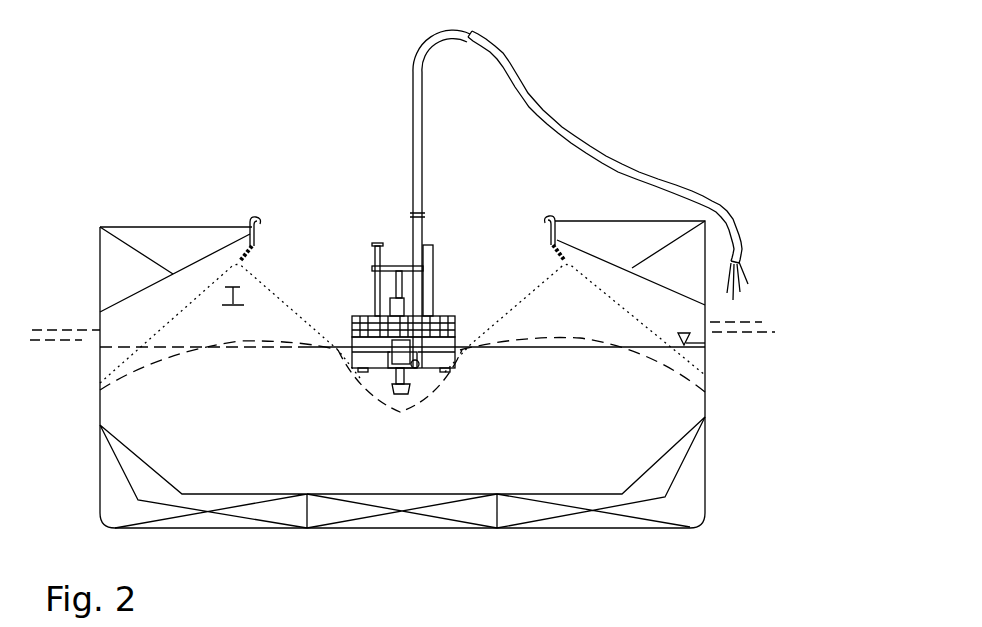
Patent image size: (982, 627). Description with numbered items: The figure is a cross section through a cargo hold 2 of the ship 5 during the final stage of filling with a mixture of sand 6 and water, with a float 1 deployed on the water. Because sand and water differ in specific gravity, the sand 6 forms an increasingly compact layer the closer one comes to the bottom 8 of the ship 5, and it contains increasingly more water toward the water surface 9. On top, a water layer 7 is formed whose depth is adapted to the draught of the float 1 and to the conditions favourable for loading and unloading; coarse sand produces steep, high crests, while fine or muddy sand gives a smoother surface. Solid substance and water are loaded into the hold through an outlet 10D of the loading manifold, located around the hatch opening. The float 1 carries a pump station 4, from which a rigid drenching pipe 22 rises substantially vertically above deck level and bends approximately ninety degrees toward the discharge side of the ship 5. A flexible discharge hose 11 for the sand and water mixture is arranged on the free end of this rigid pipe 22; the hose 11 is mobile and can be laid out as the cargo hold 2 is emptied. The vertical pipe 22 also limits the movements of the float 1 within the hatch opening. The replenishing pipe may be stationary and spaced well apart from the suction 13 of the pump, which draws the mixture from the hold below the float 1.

The float 1 is at (454, 285).
The cargo hold 2 is at (438, 456).
The pump station 4 is at (398, 280).
The ship 5 is at (92, 222).
The sand 6 is at (549, 449).
The water layer 7 is at (343, 357).
The bottom 8 is at (586, 500).
The water surface 9 is at (690, 326).
The outlet 10D is at (256, 232).
The discharge hose 11 is at (525, 103).
The suction 13 is at (395, 386).
The rigid drenching pipe 22 is at (416, 125).